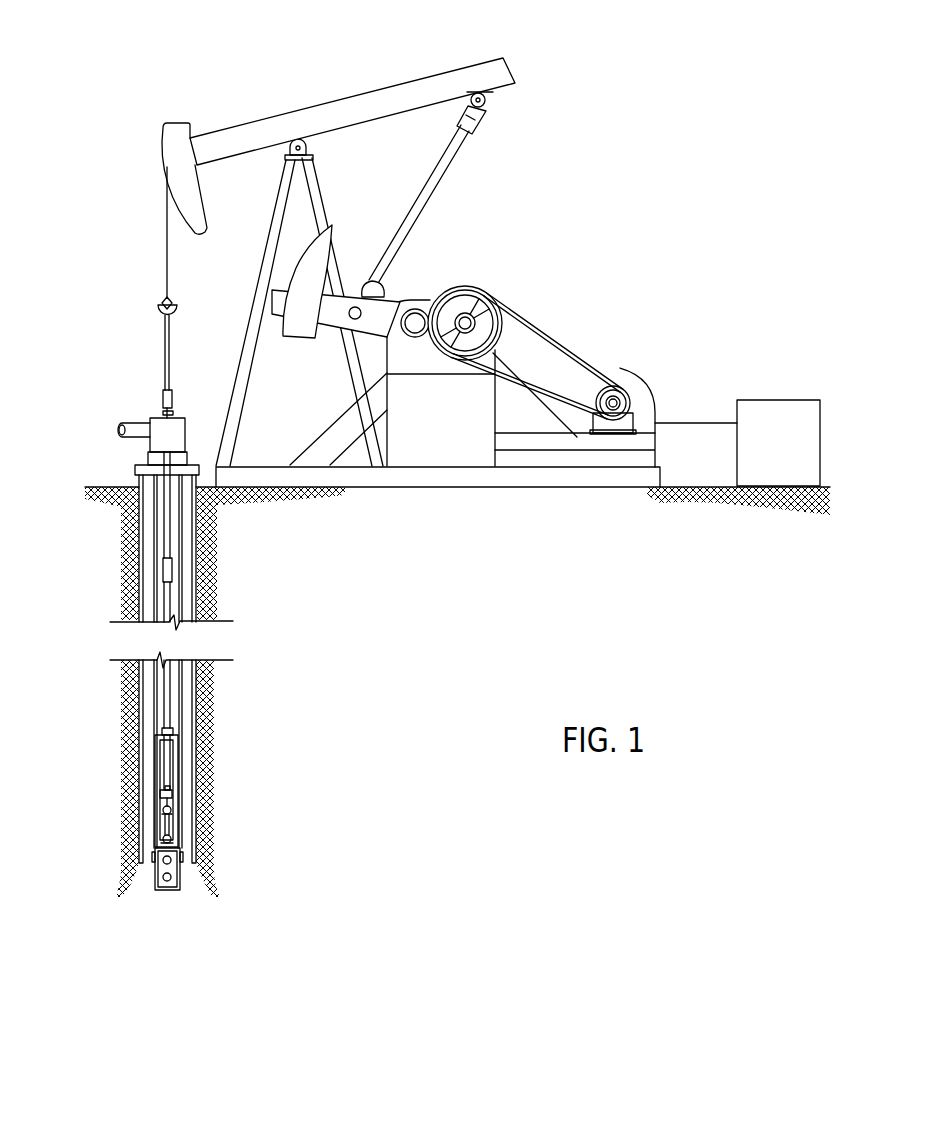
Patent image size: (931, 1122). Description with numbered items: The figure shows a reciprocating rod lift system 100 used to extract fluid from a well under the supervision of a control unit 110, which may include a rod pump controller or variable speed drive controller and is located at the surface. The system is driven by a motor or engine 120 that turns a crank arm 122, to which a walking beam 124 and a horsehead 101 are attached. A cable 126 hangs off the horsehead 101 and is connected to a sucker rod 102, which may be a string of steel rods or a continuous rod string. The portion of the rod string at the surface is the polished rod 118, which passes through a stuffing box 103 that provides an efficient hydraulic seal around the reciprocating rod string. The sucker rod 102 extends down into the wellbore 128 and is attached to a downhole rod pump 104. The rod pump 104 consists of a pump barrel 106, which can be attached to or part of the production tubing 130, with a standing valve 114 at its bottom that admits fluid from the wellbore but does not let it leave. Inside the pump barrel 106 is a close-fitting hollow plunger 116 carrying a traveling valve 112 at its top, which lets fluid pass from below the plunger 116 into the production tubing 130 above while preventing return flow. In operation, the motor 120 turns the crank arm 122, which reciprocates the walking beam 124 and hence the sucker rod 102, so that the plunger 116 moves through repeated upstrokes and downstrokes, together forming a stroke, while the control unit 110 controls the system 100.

The reciprocating rod lift system 100 is at (542, 217).
The horsehead 101 is at (181, 182).
The sucker rod 102 is at (172, 521).
The stuffing box 103 is at (154, 418).
The rod pump 104 is at (158, 721).
The pump barrel 106 is at (175, 770).
The control unit 110 is at (796, 453).
The traveling valve 112 is at (165, 812).
The standing valve 114 is at (165, 840).
The plunger 116 is at (163, 797).
The polished rod 118 is at (165, 352).
The motor 120 is at (623, 363).
The crank arm 122 is at (388, 296).
The walking beam 124 is at (472, 65).
The cable 126 is at (167, 212).
The wellbore 128 is at (242, 695).
The production tubing 130 is at (153, 596).